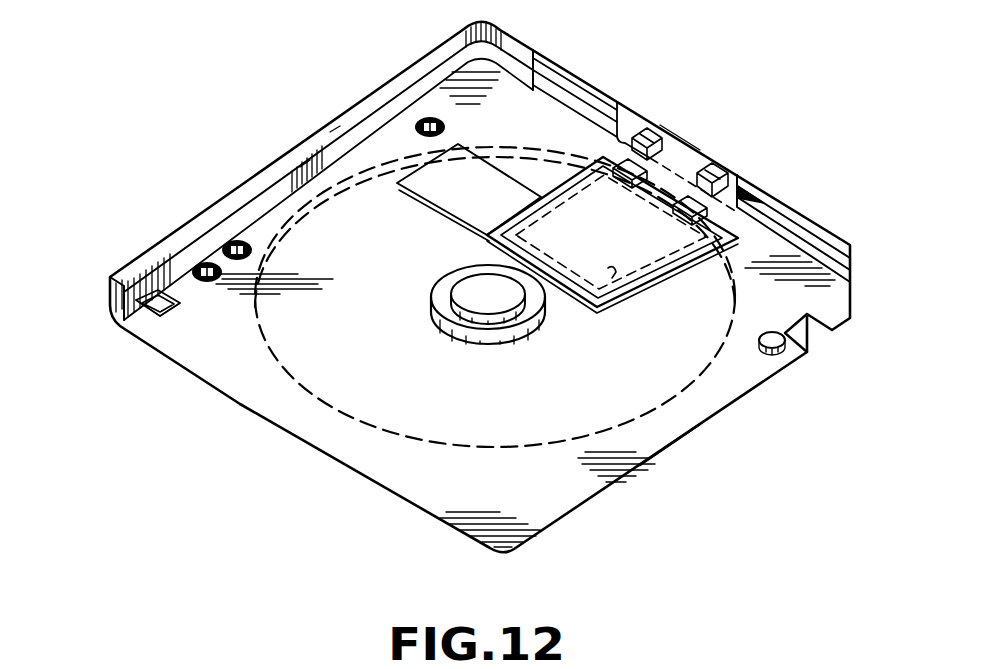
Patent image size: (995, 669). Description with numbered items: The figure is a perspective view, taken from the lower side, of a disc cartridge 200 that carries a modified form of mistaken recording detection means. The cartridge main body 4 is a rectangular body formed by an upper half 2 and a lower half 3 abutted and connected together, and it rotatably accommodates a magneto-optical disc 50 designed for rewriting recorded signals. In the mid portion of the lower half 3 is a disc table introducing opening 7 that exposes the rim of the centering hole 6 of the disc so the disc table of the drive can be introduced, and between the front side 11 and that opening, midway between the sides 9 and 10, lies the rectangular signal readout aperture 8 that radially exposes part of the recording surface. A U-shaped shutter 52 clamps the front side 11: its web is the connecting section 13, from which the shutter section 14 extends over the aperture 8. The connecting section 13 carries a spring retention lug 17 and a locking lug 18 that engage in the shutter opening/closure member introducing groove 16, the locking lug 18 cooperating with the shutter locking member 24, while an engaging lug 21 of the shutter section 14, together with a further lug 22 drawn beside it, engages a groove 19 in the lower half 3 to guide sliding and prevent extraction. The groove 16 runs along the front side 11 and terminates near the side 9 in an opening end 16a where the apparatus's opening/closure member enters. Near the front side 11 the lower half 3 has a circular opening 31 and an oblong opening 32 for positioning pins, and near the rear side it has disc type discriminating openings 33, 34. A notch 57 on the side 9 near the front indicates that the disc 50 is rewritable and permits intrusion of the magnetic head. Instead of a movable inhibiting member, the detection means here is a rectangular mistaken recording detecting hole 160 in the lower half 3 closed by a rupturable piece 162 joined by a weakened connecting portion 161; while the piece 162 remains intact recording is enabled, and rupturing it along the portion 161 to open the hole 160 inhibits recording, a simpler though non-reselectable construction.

The disc cartridge 200 is at (642, 468).
The upper half 2 is at (268, 170).
The lower half 3 is at (243, 203).
The cartridge main body 4 is at (206, 136).
The centering hole 6 is at (473, 318).
The disc table introducing opening 7 is at (497, 338).
The signal readout aperture 8 is at (613, 279).
The side 9 is at (692, 432).
The side 10 is at (345, 122).
The front side 11 is at (522, 48).
The connecting section 13 is at (695, 152).
The shutter section 14 is at (583, 300).
The shutter opening/closure member introducing groove 16 is at (800, 218).
The opening end 16a is at (851, 252).
The spring retention lug 17 is at (646, 132).
The locking lug 18 is at (730, 176).
The groove 19 is at (542, 108).
The engaging lug 21 is at (620, 178).
The tab 22 is at (688, 228).
The shutter locking member 24 is at (752, 192).
The opening 31 is at (426, 116).
The opening 32 is at (768, 357).
The disc type discriminating opening 33 is at (195, 265).
The disc type discriminating opening 34 is at (224, 241).
The magneto-optical disc 50 is at (377, 428).
The shutter 52 is at (676, 146).
The notch 57 is at (818, 328).
The mistaken recording detecting hole 160 is at (152, 320).
The weakened connecting portion 161 is at (138, 300).
The rupturable piece 162 is at (170, 318).